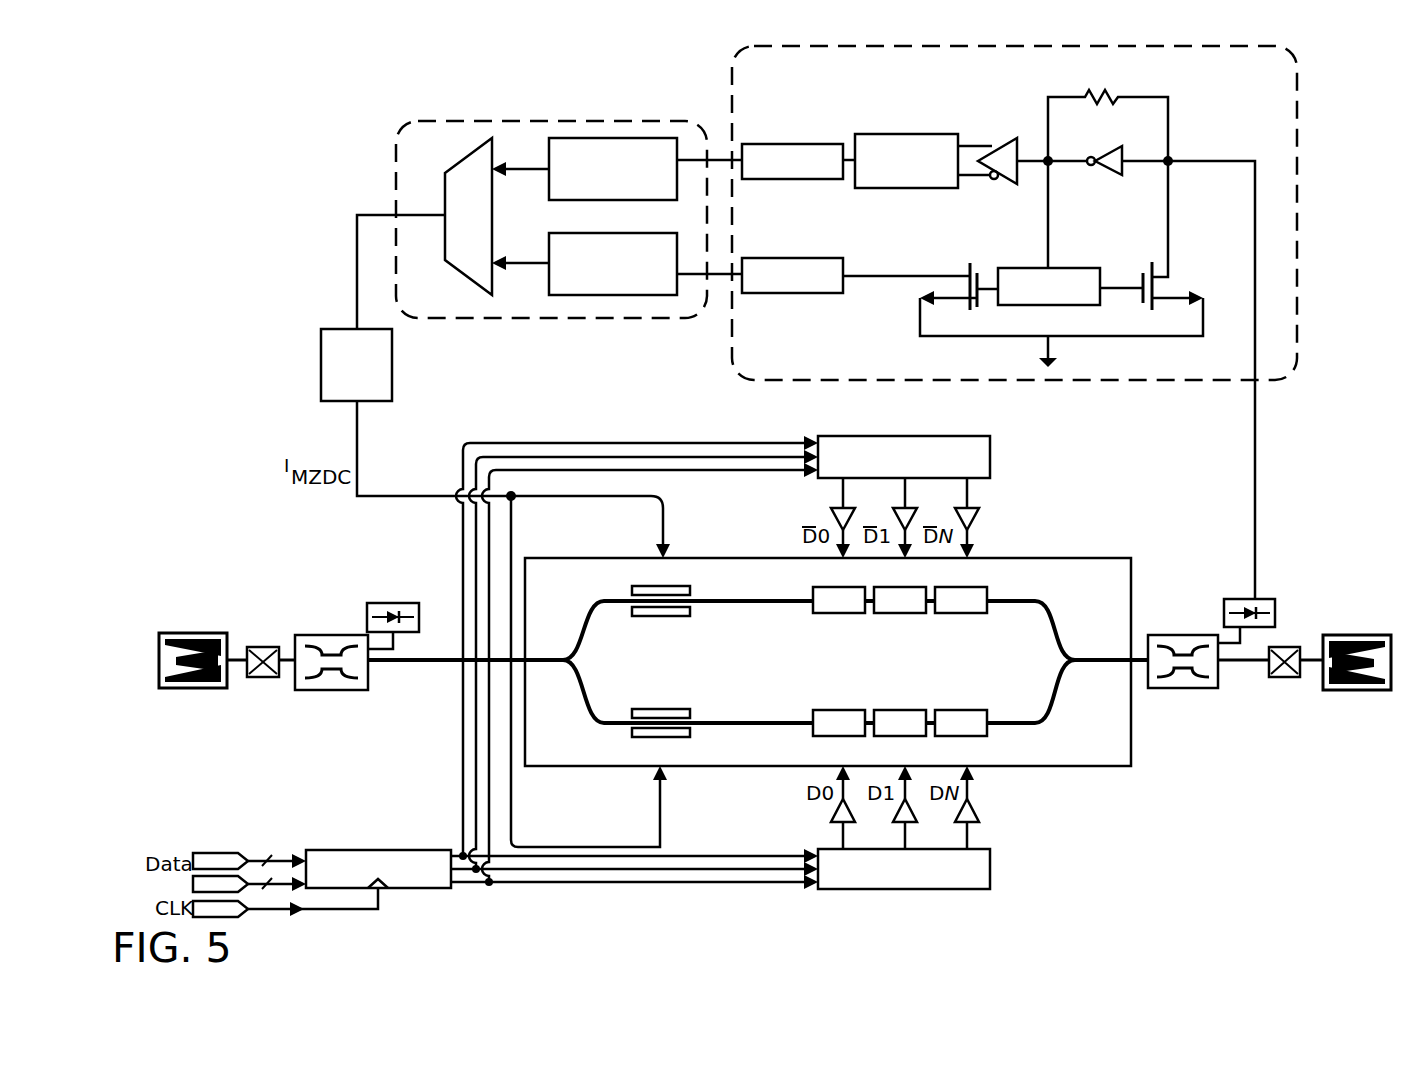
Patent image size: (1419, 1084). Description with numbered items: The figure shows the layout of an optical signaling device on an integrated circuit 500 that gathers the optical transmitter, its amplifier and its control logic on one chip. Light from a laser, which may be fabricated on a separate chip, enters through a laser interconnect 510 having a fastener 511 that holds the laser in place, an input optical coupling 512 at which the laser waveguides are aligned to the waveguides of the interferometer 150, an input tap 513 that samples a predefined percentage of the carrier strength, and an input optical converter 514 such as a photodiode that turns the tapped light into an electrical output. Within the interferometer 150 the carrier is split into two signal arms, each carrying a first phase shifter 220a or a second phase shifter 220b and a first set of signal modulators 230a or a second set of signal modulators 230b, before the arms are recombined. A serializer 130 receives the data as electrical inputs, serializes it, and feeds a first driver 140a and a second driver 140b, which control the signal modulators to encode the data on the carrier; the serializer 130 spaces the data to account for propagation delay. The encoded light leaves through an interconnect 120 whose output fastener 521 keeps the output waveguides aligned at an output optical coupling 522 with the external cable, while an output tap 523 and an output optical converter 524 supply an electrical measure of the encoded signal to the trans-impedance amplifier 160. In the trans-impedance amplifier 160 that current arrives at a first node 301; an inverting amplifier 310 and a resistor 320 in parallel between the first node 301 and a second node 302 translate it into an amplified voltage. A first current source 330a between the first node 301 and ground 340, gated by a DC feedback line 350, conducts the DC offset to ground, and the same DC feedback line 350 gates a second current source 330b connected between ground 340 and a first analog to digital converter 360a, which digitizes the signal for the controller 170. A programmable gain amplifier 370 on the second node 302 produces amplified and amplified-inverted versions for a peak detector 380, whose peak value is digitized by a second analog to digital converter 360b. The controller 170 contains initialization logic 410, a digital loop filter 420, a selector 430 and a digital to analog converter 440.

The integrated circuit 500 is at (1336, 164).
The trans-impedance amplifier 160 is at (732, 72).
The controller 170 is at (530, 121).
The selector 430 is at (468, 152).
The digital loop filter 420 is at (613, 169).
The initialization logic 410 is at (613, 264).
The digital to analog converter 440 is at (356, 365).
The second analog to digital converter 360b is at (792, 161).
The first analog to digital converter 360a is at (792, 275).
The peak detector 380 is at (906, 161).
The programmable gain amplifier 370 is at (1015, 141).
The resistor 320 is at (1115, 93).
The inverting amplifier 310 is at (1114, 148).
The first node 301 is at (1168, 161).
The second node 302 is at (1050, 163).
The DC feedback line 350 is at (1049, 286).
The second current source 330b is at (973, 268).
The first current source 330a is at (1148, 308).
The ground 340 is at (1046, 362).
The first driver 140a is at (990, 457).
The second driver 140b is at (905, 889).
The interferometer 150 is at (1097, 766).
The first phase shifter 220a is at (653, 617).
The second phase shifter 220b is at (664, 708).
The first set of signal modulators 230a is at (813, 616).
The second set of signal modulators 230b is at (987, 707).
The serializer 130 is at (365, 850).
The laser interconnect 510 is at (283, 675).
The fastener 511 is at (198, 633).
The input optical coupling 512 is at (265, 677).
The input tap 513 is at (345, 690).
The input optical converter 514 is at (367, 614).
The interconnect 120 is at (1272, 675).
The output fastener 521 is at (1337, 687).
The output optical coupling 522 is at (1283, 677).
The output tap 523 is at (1180, 635).
The output optical converter 524 is at (1278, 608).